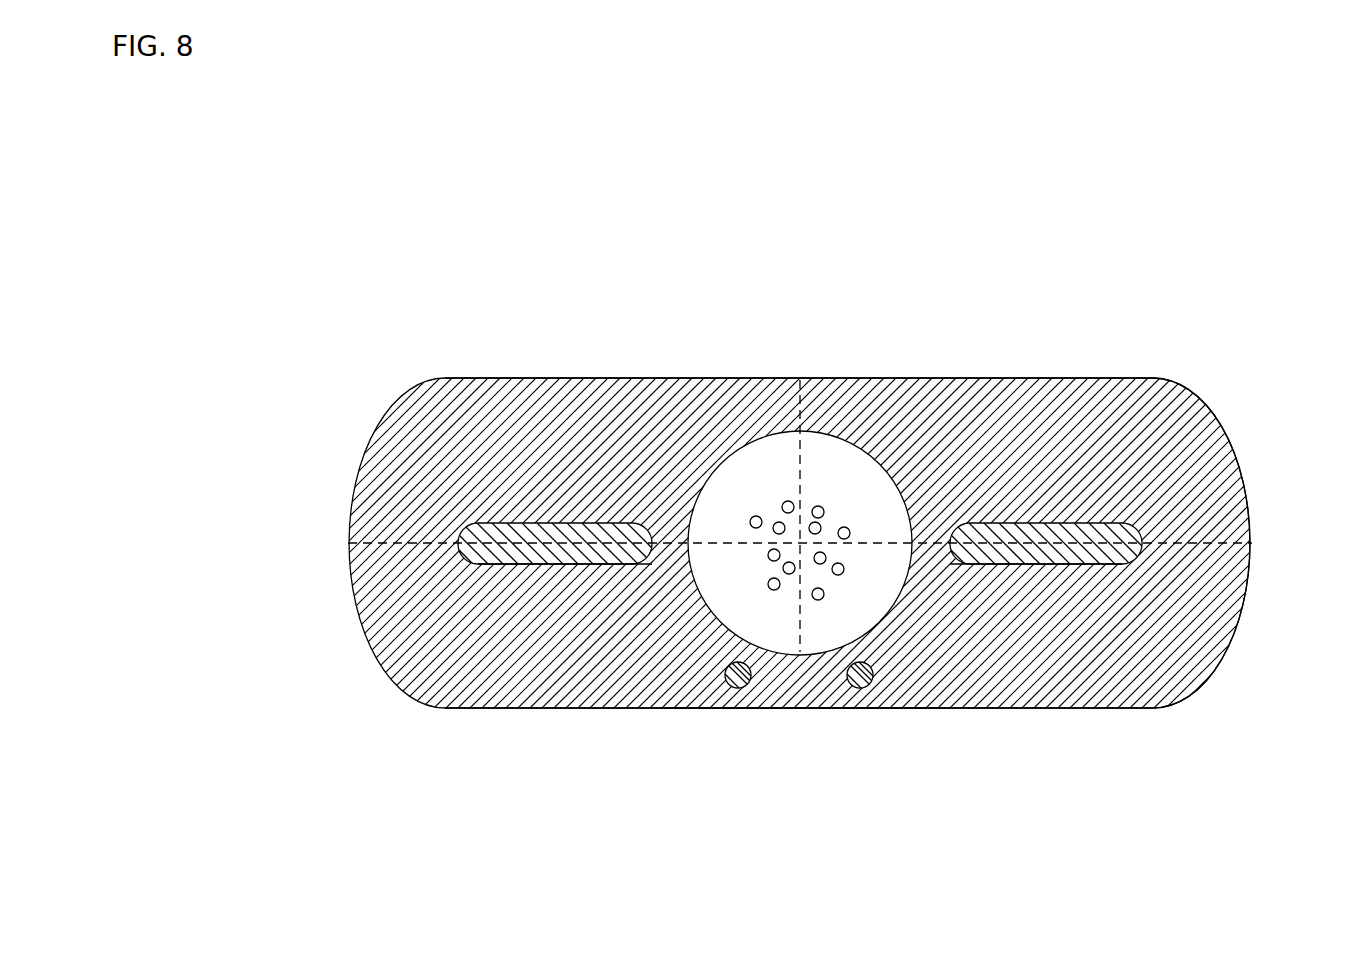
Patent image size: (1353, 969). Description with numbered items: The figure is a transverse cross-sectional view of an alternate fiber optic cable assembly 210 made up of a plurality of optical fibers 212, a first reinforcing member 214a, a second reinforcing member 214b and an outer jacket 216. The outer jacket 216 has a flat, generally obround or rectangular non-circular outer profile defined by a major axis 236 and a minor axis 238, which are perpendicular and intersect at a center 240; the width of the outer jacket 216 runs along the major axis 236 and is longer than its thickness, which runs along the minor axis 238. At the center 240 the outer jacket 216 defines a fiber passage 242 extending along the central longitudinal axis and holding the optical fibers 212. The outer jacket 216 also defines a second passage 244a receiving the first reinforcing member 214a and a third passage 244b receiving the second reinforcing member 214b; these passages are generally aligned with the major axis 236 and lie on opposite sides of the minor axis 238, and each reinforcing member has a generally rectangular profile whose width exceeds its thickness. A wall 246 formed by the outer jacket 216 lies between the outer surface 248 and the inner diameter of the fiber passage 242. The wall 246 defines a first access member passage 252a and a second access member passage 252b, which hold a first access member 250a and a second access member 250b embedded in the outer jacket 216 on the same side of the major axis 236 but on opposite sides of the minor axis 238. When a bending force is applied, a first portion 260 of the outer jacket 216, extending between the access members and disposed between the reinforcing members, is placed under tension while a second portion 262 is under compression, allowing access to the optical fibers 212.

The fiber optic cable assembly 210 is at (607, 292).
The outer jacket 216 is at (1002, 370).
The second portion 262 is at (837, 380).
The fiber passage 242 is at (883, 448).
The center 240 is at (798, 541).
The minor axis 238 is at (800, 405).
The optical fibers 212 is at (770, 589).
The first reinforcing member 214a is at (465, 562).
The second reinforcing member 214b is at (1112, 508).
The second passage 244a is at (558, 563).
The third passage 244b is at (1053, 567).
The outer surface 248 is at (665, 708).
The first access member 250a is at (720, 708).
The second access member 250b is at (858, 708).
The first access member passage 252a is at (757, 690).
The second access member passage 252b is at (873, 693).
The first portion 260 is at (810, 708).
The wall 246 is at (817, 677).
The major axis 236 is at (1217, 545).